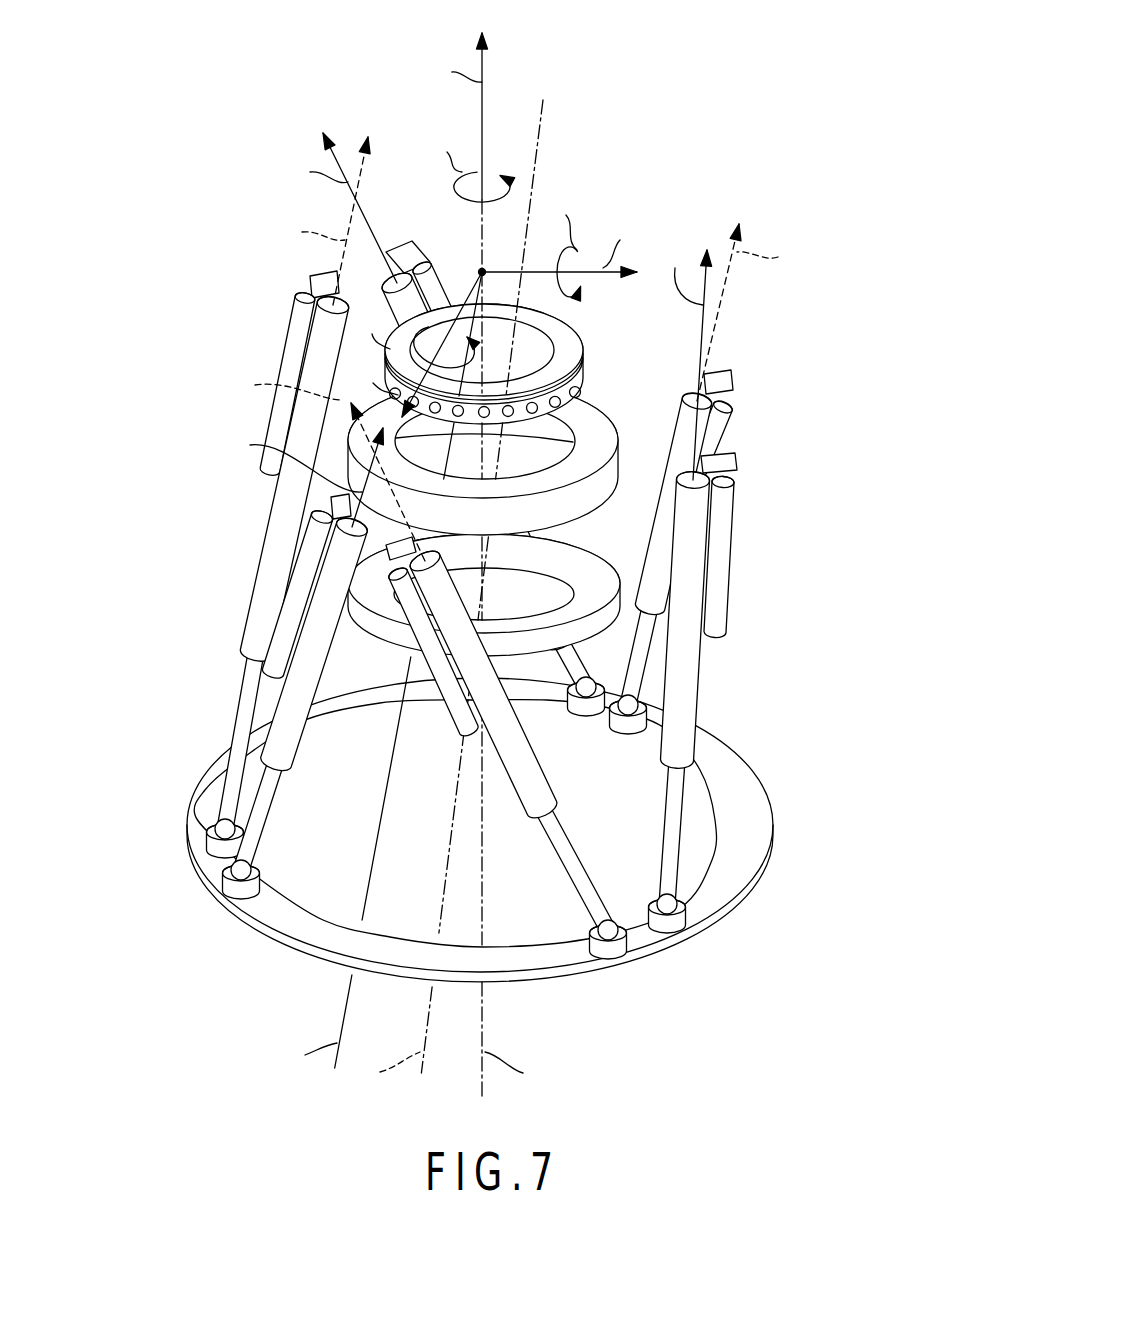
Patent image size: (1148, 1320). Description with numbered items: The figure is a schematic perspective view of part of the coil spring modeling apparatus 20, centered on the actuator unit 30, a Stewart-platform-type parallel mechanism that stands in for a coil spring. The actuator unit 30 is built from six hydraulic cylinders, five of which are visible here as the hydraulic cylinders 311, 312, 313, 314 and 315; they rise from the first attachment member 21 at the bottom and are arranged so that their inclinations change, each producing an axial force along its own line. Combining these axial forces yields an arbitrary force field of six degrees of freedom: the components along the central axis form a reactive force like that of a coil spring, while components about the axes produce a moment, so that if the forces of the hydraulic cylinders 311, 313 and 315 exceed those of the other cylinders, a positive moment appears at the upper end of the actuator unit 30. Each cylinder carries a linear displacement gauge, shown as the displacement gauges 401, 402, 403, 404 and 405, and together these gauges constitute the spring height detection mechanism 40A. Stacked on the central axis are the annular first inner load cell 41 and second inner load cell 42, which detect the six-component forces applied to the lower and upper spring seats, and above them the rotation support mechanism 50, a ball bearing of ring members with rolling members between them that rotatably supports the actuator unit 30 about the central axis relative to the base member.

The coil spring modeling apparatus 20 is at (481, 566).
The first attachment member 21 is at (287, 923).
The actuator unit 30 is at (733, 693).
The first hydraulic cylinder 311 is at (287, 513).
The second hydraulic cylinder 312 is at (288, 717).
The third hydraulic cylinder 313 is at (540, 760).
The fourth hydraulic cylinder 314 is at (700, 543).
The fifth hydraulic cylinder 315 is at (702, 442).
The spring height detection mechanism 40A is at (481, 565).
The first displacement gauge 401 is at (292, 325).
The second displacement gauge 402 is at (287, 607).
The third displacement gauge 403 is at (413, 607).
The fourth displacement gauge 404 is at (718, 603).
The fifth displacement gauge 405 is at (733, 425).
The first inner load cell 41 is at (597, 543).
The second inner load cell 42 is at (613, 412).
The rotation support mechanism 50 is at (578, 337).